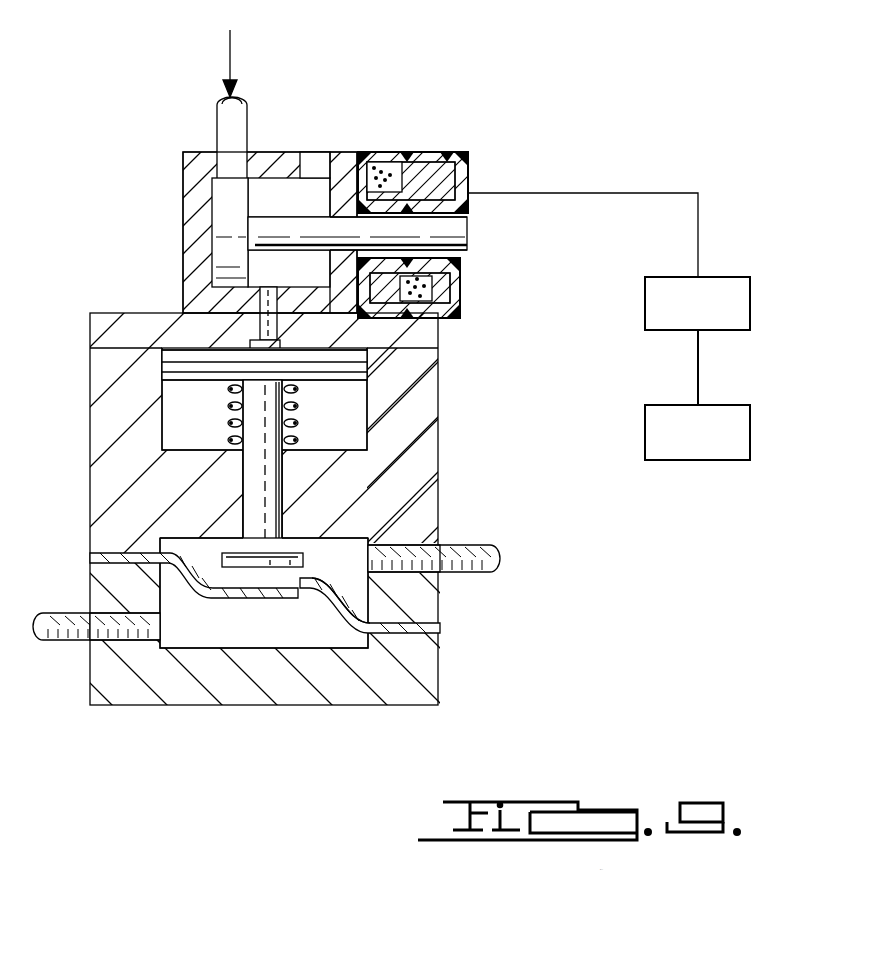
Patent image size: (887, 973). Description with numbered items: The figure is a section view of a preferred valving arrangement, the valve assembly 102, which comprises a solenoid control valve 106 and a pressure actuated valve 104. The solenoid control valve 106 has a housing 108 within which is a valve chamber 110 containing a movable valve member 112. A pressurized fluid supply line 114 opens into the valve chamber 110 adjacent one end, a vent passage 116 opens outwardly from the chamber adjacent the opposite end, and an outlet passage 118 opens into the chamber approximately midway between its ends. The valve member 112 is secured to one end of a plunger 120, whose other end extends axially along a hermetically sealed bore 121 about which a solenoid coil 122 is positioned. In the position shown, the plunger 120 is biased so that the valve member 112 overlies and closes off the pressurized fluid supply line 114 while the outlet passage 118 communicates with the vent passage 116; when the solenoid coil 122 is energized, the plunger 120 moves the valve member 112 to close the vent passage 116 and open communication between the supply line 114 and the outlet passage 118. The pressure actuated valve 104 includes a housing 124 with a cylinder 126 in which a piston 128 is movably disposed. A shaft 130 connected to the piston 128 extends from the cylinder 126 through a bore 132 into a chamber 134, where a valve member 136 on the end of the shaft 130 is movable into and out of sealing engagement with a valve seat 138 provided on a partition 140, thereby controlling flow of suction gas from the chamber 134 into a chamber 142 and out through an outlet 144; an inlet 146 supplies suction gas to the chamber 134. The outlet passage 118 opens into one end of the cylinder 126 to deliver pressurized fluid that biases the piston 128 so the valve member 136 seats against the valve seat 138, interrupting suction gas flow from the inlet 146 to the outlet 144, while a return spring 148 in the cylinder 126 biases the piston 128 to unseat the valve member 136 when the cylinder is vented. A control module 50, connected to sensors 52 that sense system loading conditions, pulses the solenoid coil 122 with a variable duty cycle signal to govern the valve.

The valve assembly 102 is at (104, 180).
The pressure actuated valve 104 is at (436, 456).
The solenoid control valve 106 is at (404, 142).
The housing 108 is at (183, 188).
The valve chamber 110 is at (300, 209).
The valve member 112 is at (225, 246).
The pressurized fluid supply line 114 is at (238, 122).
The vent passage 116 is at (312, 158).
The outlet passage 118 is at (257, 306).
The plunger 120 is at (455, 228).
The hermetically sealed bore 121 is at (440, 248).
The solenoid coil 122 is at (463, 176).
The housing 124 is at (105, 420).
The cylinder 126 is at (350, 449).
The piston 128 is at (370, 356).
The shaft 130 is at (272, 497).
The bore 132 is at (253, 480).
The chamber 134 is at (350, 580).
The valve member 136 is at (212, 553).
The valve seat 138 is at (305, 580).
The partition 140 is at (334, 612).
The chamber 142 is at (215, 644).
The outlet 144 is at (52, 640).
The inlet 146 is at (478, 546).
The return spring 148 is at (297, 410).
The control module 50 is at (742, 295).
The sensors 52 is at (740, 435).